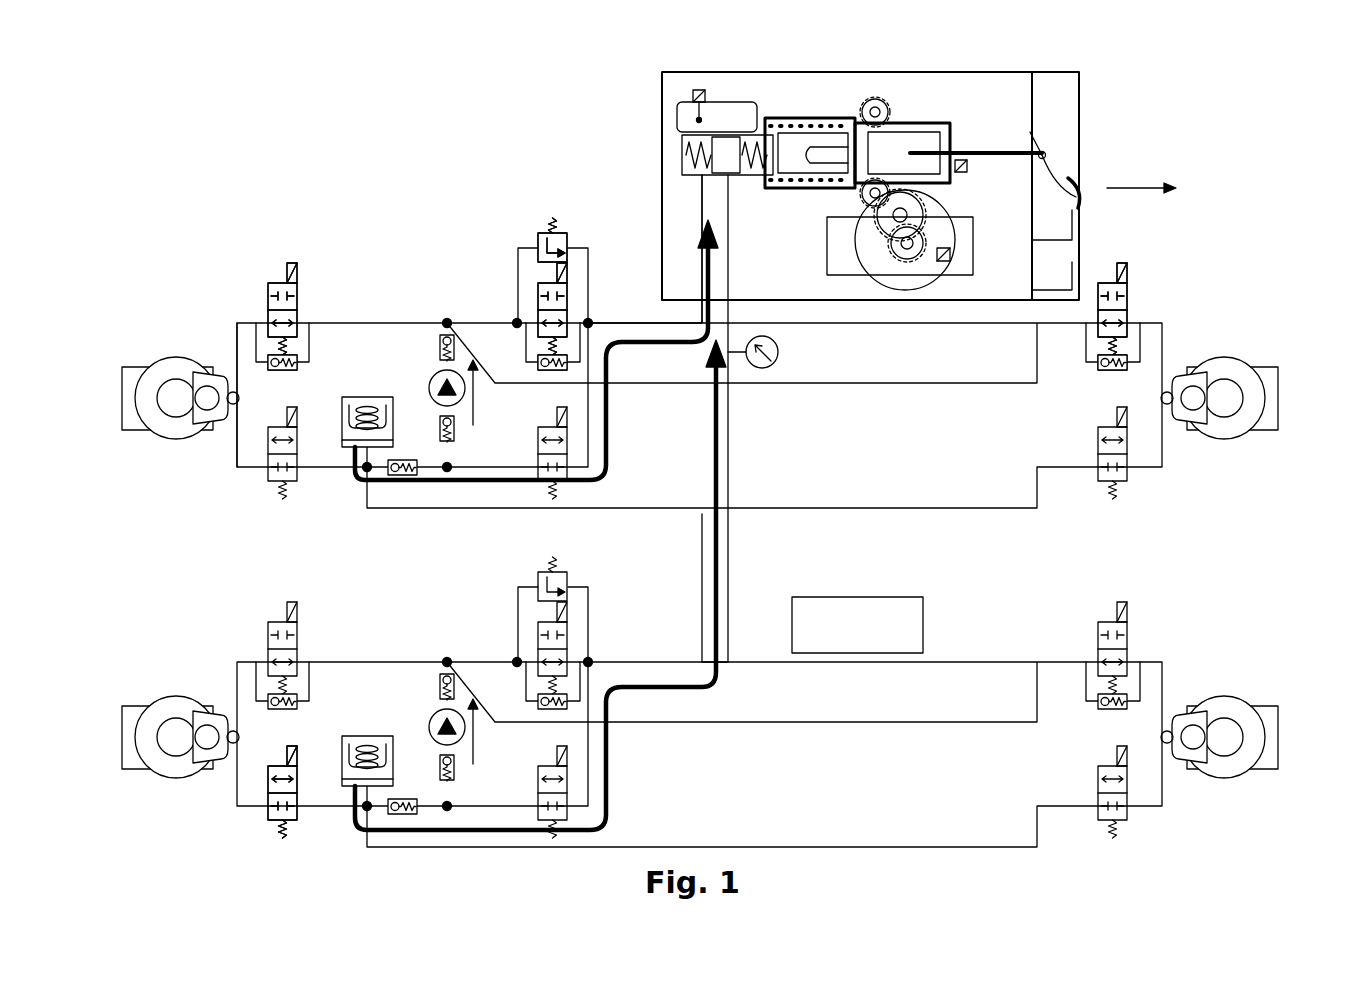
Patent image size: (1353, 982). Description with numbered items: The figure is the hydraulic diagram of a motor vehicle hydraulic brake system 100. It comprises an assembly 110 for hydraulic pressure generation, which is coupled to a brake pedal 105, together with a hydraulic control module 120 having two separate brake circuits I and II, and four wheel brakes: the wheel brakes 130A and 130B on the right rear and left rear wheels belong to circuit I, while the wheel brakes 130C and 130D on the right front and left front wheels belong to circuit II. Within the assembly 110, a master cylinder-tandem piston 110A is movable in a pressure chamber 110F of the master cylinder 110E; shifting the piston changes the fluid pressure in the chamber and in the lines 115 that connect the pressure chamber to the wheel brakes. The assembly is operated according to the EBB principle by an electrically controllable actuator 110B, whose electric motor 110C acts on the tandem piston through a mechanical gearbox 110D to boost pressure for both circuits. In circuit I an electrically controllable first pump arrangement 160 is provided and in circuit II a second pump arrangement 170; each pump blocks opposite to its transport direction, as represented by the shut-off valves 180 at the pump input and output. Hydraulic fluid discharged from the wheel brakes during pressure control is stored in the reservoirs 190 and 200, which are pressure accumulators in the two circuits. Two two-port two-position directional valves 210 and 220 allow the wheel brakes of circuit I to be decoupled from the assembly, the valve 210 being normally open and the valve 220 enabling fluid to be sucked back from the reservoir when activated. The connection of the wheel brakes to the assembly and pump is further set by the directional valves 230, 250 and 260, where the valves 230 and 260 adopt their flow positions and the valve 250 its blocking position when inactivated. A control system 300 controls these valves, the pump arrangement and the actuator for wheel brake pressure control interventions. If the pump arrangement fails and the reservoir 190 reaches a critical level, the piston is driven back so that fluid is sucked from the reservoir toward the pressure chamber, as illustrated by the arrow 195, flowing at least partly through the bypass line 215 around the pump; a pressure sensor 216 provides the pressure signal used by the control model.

The hydraulic brake system 100 is at (1212, 171).
The brake pedal 105 is at (1050, 170).
The assembly for hydraulic pressure generation 110 is at (1032, 85).
The master cylinder-tandem piston 110A is at (800, 148).
The electrically controllable actuator 110B is at (857, 284).
The electric motor 110C is at (906, 295).
The mechanical gearbox 110D is at (918, 194).
The master cylinder 110E is at (690, 152).
The pressure chamber 110F is at (755, 176).
The lines 115 is at (616, 313).
The hydraulic control module 120 is at (297, 352).
The wheel brake 130A is at (213, 370).
The wheel brake 130B is at (1190, 372).
The wheel brake 130C is at (184, 703).
The wheel brake 130D is at (1219, 722).
The first pump arrangement 160 is at (398, 476).
The second pump arrangement 170 is at (432, 680).
The shut-off valves 180 is at (447, 335).
The reservoir 190 is at (366, 397).
The arrow 195 is at (435, 406).
The reservoir 200 is at (364, 728).
The 2/2-way valve 210 is at (538, 292).
The bypass line 215 is at (636, 346).
The pressure sensor 216 is at (762, 369).
The 2/2-way valve 220 is at (540, 486).
The 2/2-way valve 230 is at (284, 263).
The 2/2-way valve 250 is at (1106, 483).
The 2/2-way valve 260 is at (1115, 268).
The control system 300 is at (857, 625).